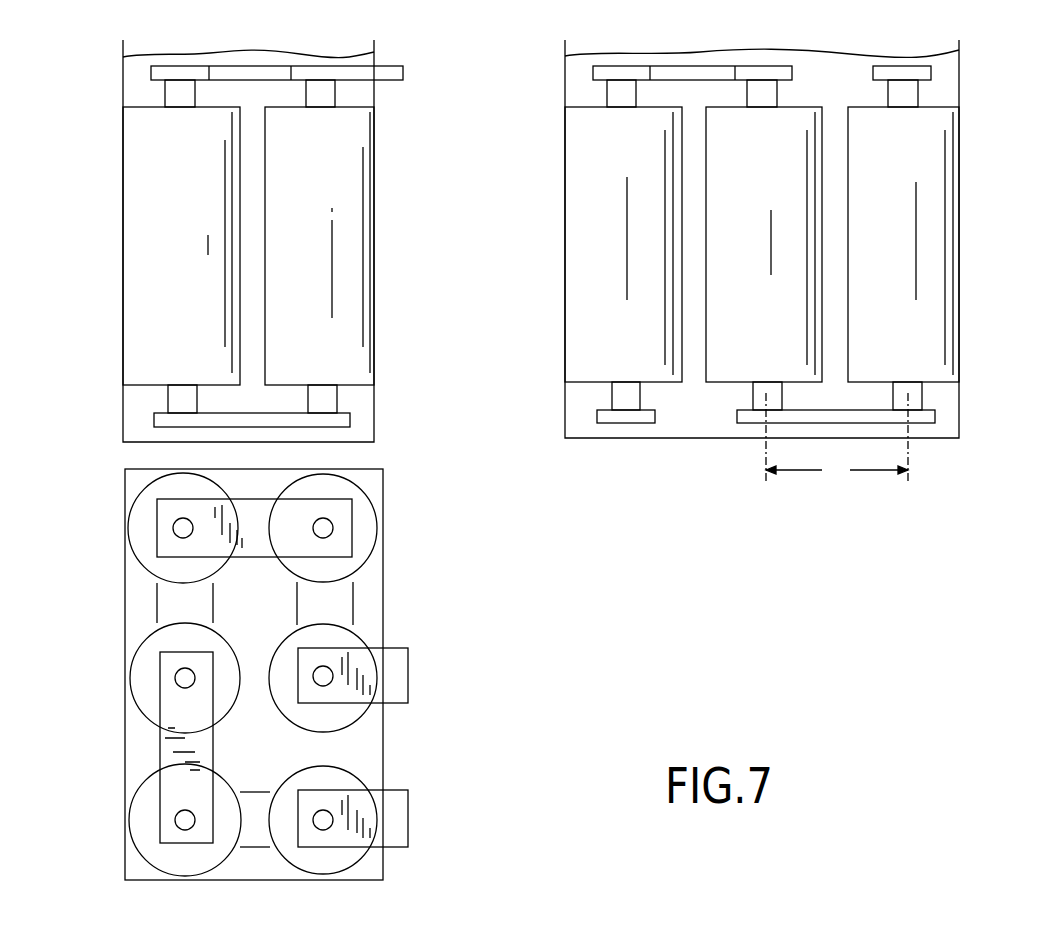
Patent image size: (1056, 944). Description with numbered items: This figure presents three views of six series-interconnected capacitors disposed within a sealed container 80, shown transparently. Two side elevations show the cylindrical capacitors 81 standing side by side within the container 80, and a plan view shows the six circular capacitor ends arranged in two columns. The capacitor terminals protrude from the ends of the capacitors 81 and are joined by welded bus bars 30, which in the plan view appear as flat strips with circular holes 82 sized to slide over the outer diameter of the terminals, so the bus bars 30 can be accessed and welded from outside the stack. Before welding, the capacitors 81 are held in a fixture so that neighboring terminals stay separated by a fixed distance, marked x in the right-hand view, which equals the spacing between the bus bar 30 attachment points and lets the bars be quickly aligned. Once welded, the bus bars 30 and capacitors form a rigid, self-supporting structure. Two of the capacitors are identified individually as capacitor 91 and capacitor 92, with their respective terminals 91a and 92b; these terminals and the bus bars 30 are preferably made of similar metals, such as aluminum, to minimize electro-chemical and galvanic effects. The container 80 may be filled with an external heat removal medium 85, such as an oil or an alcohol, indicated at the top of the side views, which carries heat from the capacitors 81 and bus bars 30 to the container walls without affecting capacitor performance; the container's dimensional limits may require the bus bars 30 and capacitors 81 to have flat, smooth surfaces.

The external heat removal medium 85 is at (130, 52).
The sealed container 80 is at (123, 407).
The capacitor 81 is at (363, 246).
The bus bar 30 is at (350, 413).
The hole 82 is at (353, 538).
The capacitor 91 is at (713, 367).
The capacitor terminal 91a is at (753, 388).
The capacitor 92 is at (947, 322).
The capacitor terminal 92b is at (913, 388).